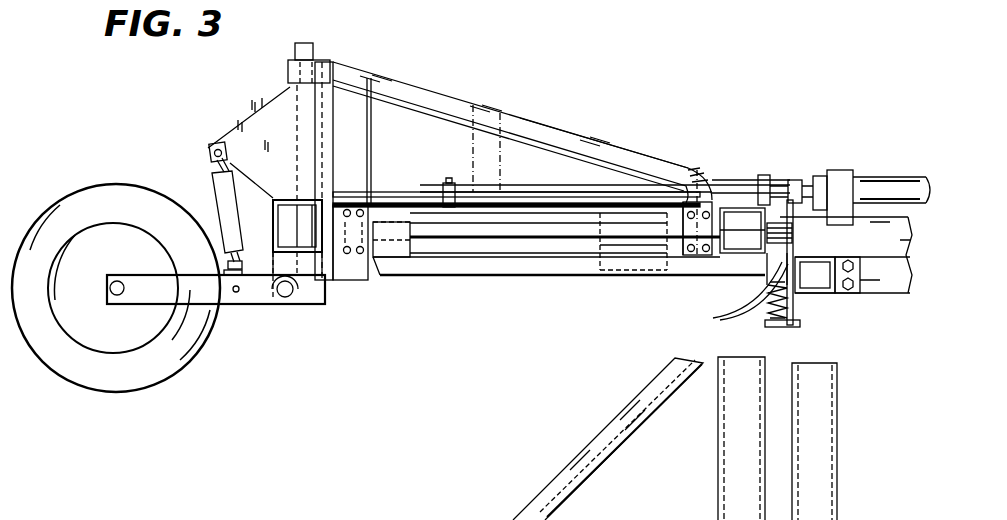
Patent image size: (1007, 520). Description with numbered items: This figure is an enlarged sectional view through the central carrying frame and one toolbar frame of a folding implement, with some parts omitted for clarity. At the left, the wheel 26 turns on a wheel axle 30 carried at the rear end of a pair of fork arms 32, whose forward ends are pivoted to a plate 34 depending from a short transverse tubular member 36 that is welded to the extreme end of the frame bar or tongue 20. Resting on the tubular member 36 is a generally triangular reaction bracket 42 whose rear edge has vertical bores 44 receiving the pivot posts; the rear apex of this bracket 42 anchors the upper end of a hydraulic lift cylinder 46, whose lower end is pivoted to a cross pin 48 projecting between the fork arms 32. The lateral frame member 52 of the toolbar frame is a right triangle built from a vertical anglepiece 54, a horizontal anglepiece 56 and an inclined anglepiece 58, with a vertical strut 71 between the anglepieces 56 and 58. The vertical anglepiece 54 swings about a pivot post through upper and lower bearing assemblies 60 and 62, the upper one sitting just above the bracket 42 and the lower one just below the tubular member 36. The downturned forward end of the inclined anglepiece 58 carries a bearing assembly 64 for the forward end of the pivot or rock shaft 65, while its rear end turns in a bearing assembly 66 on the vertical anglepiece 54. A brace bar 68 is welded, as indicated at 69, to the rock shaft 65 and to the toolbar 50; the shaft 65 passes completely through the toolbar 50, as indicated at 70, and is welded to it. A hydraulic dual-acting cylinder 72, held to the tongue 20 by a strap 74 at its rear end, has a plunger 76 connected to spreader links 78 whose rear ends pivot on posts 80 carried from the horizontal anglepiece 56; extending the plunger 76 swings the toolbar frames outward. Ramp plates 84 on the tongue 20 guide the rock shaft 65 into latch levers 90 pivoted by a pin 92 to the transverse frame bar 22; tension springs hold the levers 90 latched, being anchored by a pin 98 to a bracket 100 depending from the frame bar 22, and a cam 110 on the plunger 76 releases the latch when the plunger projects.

The frame bar or tongue 20 is at (885, 270).
The transverse frame bar 22 is at (848, 293).
The wheel 26 is at (172, 358).
The wheel axle 30 is at (120, 296).
The fork arms 32 is at (168, 266).
The plate 34 is at (310, 300).
The tubular member 36 is at (270, 212).
The reaction bracket 42 is at (258, 118).
The vertical bores 44 is at (288, 85).
The hydraulic lift cylinder 46 is at (209, 186).
The cross pin 48 is at (237, 293).
The toolbar 50 is at (765, 265).
The lateral frame member 52 is at (520, 112).
The vertical anglepiece 54 is at (371, 145).
The horizontal anglepiece 56 is at (384, 197).
The inclined anglepiece 58 is at (452, 96).
The upper bearing assembly 60 is at (312, 56).
The lower bearing assembly 62 is at (316, 282).
The bearing assembly 64 is at (712, 182).
The pivot or rock shaft 65 is at (538, 232).
The bearing assembly 66 is at (365, 282).
The brace bar 68 is at (595, 272).
The weld 69 is at (415, 265).
The shaft passage through toolbar 70 is at (792, 236).
The vertical strut 71 is at (473, 165).
The hydraulic dual-acting cylinder 72 is at (888, 184).
The strap 74 is at (840, 176).
The plunger 76 is at (798, 180).
The spreader links 78 is at (540, 186).
The posts 80 is at (444, 197).
The ramp plates 84 is at (650, 252).
The latch levers 90 is at (713, 318).
The pin 92 is at (812, 292).
The pin 98 is at (767, 318).
The bracket 100 is at (800, 324).
The cam 110 is at (766, 176).